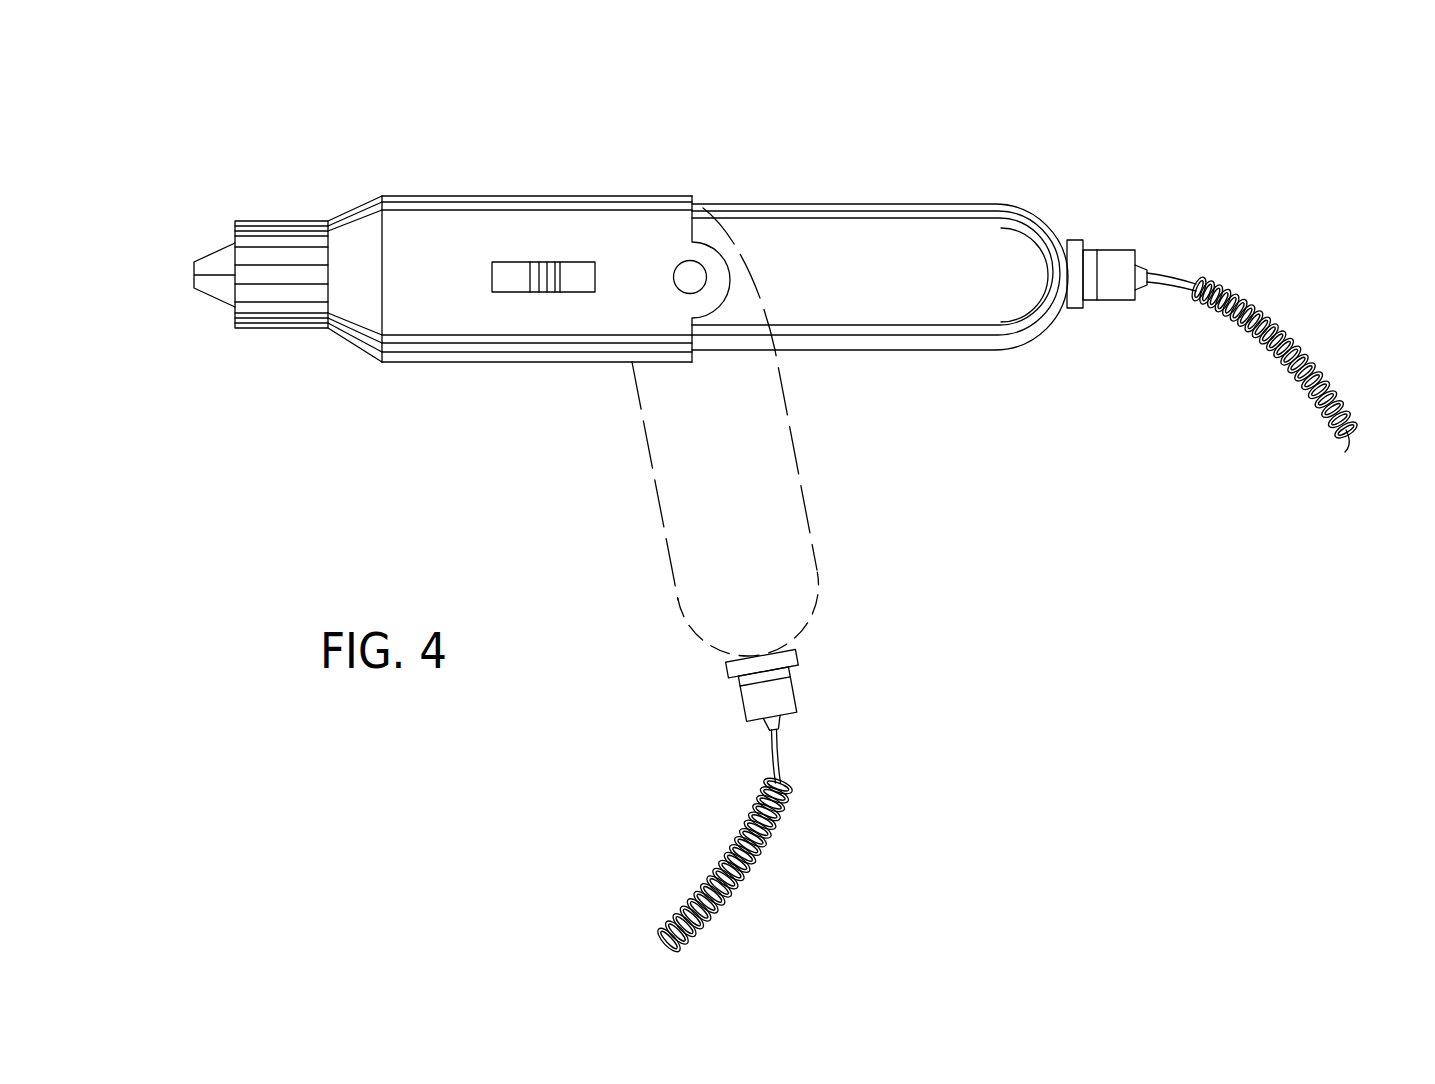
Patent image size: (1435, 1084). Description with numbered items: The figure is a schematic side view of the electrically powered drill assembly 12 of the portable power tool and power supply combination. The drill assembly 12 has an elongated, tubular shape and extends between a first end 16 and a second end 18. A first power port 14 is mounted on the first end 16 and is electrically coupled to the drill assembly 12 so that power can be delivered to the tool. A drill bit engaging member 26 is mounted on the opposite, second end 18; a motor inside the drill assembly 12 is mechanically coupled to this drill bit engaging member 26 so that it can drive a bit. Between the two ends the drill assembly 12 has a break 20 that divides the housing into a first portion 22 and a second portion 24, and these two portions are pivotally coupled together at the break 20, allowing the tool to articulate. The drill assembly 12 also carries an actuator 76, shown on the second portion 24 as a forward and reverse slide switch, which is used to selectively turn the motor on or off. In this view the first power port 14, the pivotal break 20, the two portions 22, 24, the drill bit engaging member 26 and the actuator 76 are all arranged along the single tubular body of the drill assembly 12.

The drill assembly 12 is at (748, 126).
The first power port 14 is at (1106, 302).
The first end 16 is at (1062, 230).
The second end 18 is at (352, 214).
The break 20 is at (713, 205).
The first portion 22 is at (884, 351).
The second portion 24 is at (458, 196).
The drill bit engaging member 26 is at (207, 251).
The actuator 76 is at (543, 261).